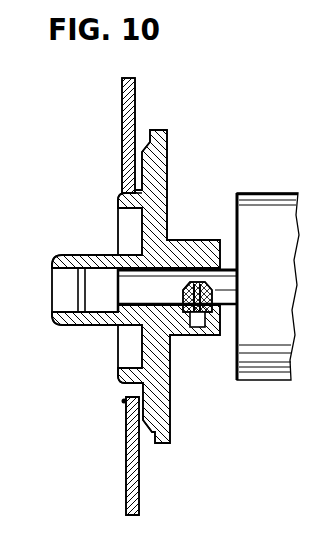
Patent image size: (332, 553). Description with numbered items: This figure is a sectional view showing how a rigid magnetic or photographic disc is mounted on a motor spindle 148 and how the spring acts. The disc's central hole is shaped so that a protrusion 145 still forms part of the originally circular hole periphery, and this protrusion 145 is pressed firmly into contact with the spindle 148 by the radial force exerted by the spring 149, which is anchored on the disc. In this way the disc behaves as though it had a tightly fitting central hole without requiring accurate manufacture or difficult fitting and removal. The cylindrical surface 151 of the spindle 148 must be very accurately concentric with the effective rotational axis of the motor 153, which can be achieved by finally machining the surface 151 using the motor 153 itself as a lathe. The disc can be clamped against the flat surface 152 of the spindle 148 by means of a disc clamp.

The protrusion 145 is at (122, 184).
The spindle 148 is at (118, 200).
The spring 149 is at (128, 390).
The cylindrical surface 151 is at (155, 388).
The flat surface 152 is at (139, 148).
The motor 153 is at (243, 193).